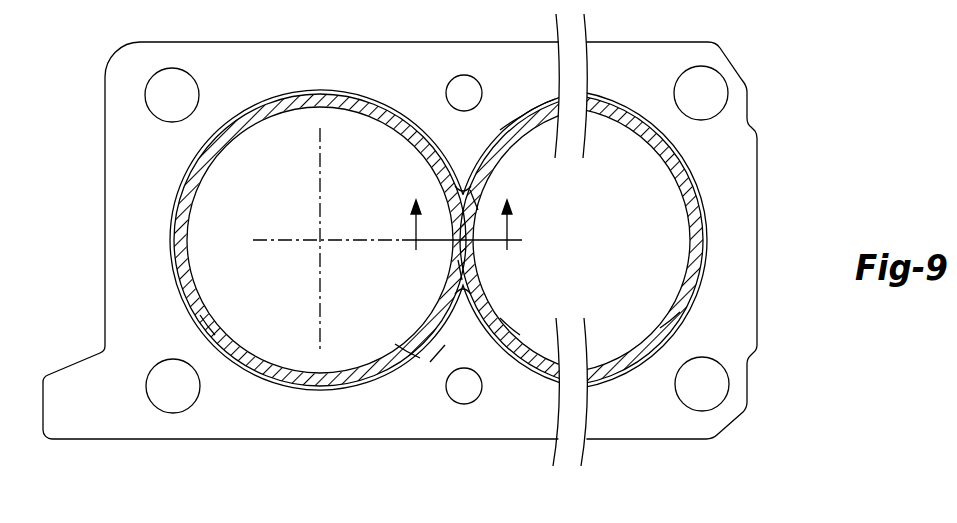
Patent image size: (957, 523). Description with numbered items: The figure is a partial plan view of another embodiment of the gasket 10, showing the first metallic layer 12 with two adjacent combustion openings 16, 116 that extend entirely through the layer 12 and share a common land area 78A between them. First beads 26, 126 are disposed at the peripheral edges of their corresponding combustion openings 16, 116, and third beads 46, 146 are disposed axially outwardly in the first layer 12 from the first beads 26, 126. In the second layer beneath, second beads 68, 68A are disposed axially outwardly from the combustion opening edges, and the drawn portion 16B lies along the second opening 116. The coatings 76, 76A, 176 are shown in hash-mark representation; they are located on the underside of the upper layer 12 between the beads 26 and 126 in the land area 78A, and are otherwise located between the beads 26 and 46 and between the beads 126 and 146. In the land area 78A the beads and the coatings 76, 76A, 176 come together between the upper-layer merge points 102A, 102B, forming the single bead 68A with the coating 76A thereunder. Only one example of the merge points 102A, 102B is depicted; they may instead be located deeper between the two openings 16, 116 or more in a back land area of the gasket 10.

The gasket 10 is at (732, 487).
The first metallic layer 12 is at (508, 421).
The combustion opening 16 is at (270, 200).
The combustion opening 116 is at (608, 248).
The second opening edge portion 16B is at (508, 322).
The first bead 26 is at (383, 130).
The first bead 126 is at (510, 153).
The third bead 46 is at (385, 127).
The third bead 146 is at (528, 118).
The second bead 68 is at (398, 350).
The single bead 68A is at (484, 196).
The coating 76 is at (207, 323).
The coating 76A is at (460, 270).
The common land area 78A is at (441, 350).
The merge point 102A is at (465, 184).
The merge point 102B is at (463, 296).
The coating 176 is at (673, 320).